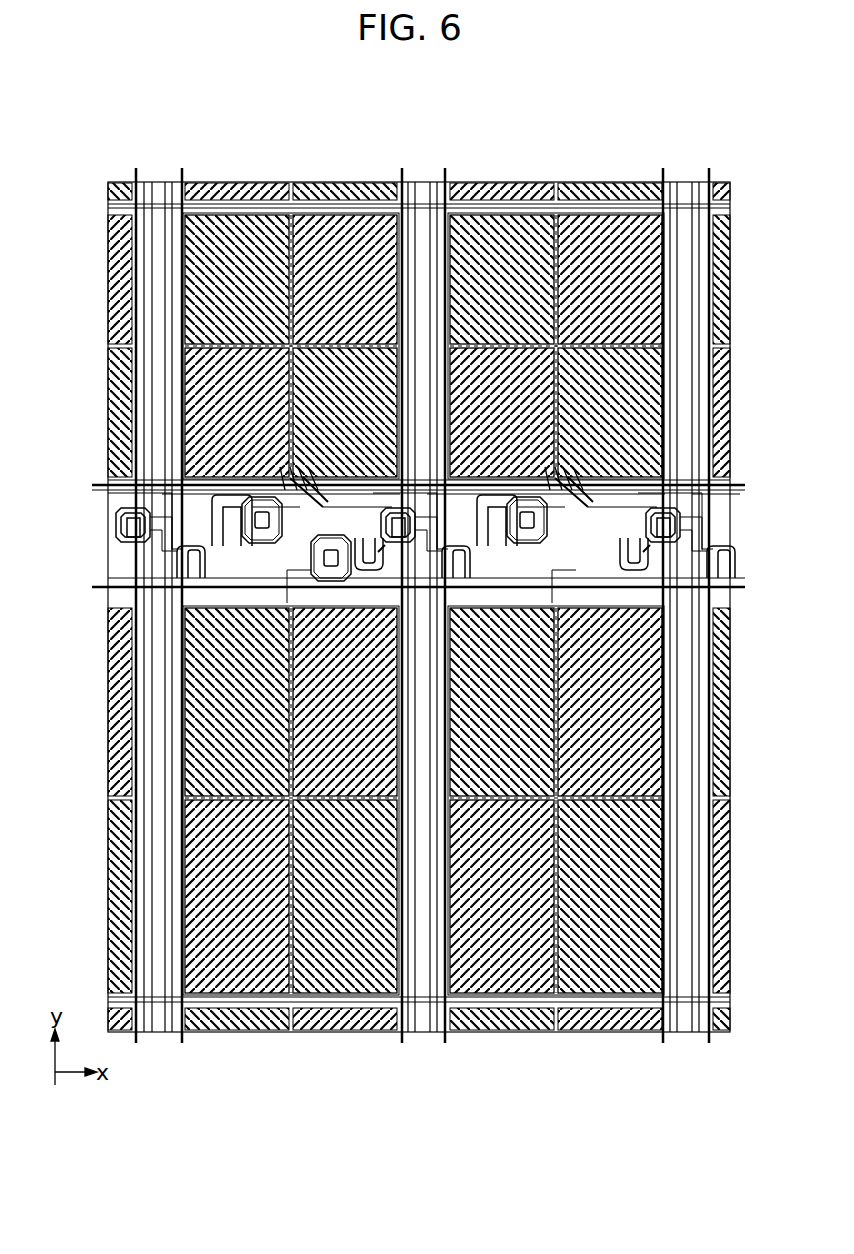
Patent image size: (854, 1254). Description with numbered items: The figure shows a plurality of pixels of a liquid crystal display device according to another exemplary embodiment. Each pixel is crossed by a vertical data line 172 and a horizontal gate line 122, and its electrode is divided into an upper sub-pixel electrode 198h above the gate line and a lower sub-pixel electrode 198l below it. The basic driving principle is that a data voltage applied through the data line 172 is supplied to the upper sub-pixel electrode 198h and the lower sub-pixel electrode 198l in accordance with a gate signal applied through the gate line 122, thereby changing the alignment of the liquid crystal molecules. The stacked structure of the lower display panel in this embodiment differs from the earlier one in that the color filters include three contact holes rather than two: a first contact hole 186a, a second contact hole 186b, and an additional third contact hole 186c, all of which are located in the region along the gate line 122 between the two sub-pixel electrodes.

The gate line 122 is at (127, 556).
The data line 172 is at (158, 203).
The first contact hole 186a is at (117, 522).
The second contact hole 186b is at (331, 568).
The third contact hole 186c is at (397, 543).
The upper sub-pixel electrode 198h is at (293, 217).
The lower sub-pixel electrode 198l is at (293, 988).